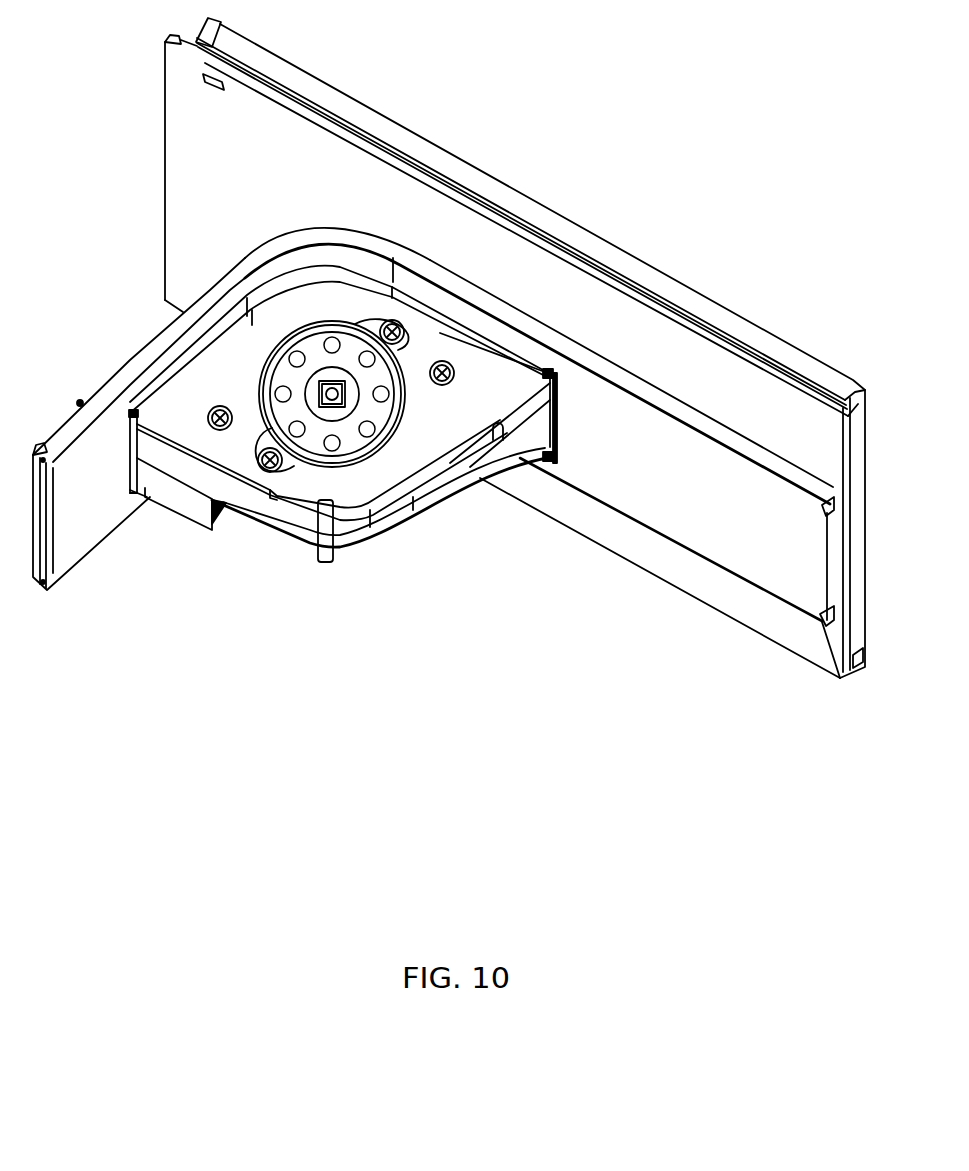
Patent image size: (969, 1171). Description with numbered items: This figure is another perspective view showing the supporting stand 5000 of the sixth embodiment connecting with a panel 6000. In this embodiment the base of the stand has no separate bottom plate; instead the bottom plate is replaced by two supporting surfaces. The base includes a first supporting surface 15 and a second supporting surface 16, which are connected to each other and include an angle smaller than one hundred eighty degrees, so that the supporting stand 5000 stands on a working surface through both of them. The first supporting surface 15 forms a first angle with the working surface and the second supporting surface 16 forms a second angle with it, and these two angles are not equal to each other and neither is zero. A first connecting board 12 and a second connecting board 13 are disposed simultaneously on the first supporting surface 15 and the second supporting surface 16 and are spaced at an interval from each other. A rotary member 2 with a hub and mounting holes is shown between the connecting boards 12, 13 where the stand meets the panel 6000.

The panel body 6000 is at (407, 222).
The supporting stand 5000 is at (445, 481).
The rotary damper 2 is at (305, 442).
The first connecting board 12 is at (176, 412).
The second connecting board 13 is at (173, 468).
The first supporting surface 15 is at (162, 341).
The second supporting surface 16 is at (658, 502).